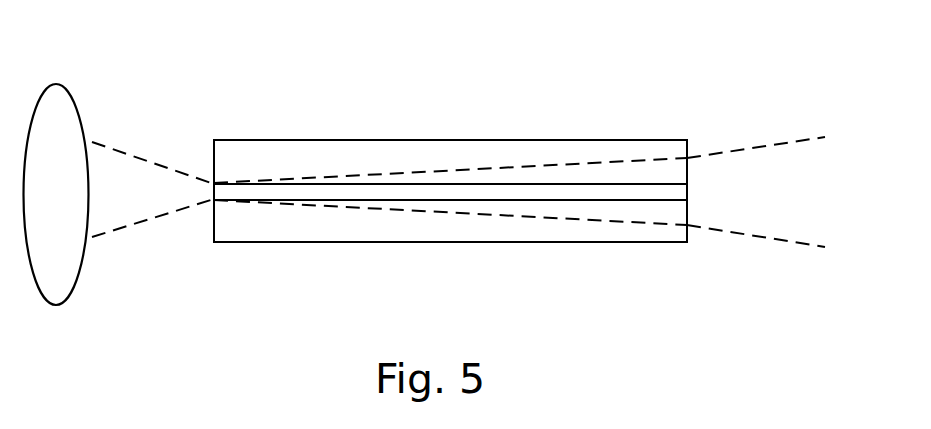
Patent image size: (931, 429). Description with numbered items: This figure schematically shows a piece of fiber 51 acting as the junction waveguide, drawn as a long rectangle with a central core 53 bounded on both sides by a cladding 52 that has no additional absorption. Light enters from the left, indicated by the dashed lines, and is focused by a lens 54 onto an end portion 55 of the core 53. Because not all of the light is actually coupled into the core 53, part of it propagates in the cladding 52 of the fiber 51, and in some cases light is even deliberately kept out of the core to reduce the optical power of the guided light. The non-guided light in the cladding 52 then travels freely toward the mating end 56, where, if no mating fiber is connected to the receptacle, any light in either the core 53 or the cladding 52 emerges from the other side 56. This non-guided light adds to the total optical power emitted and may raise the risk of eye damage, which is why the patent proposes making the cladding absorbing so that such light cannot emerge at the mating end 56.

The fiber 51 is at (332, 138).
The cladding 52 is at (250, 157).
The core 53 is at (320, 190).
The lens 54 is at (53, 267).
The end portion 55 is at (213, 192).
The mating end 56 is at (687, 192).